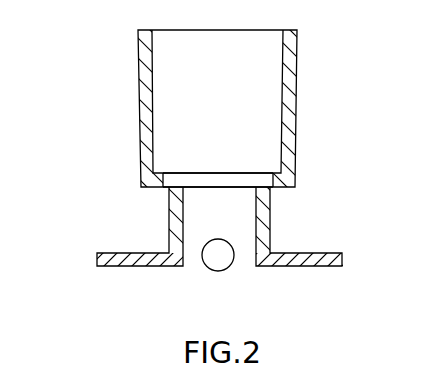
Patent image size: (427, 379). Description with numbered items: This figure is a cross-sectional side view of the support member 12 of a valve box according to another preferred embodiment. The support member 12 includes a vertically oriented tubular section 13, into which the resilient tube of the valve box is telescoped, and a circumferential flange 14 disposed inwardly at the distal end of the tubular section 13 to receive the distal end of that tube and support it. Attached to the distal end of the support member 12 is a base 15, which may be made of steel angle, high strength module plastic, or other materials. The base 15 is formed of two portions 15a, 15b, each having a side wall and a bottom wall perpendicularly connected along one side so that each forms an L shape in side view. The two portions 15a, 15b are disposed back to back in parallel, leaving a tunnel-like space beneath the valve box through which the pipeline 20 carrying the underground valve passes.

The support member 12 is at (213, 189).
The tubular section 13 is at (298, 110).
The circumferential flange 14 is at (281, 188).
The base 15 is at (213, 189).
The first portion of the base 15a is at (145, 264).
The second portion of the base 15b is at (285, 268).
The pipeline 20 is at (213, 270).